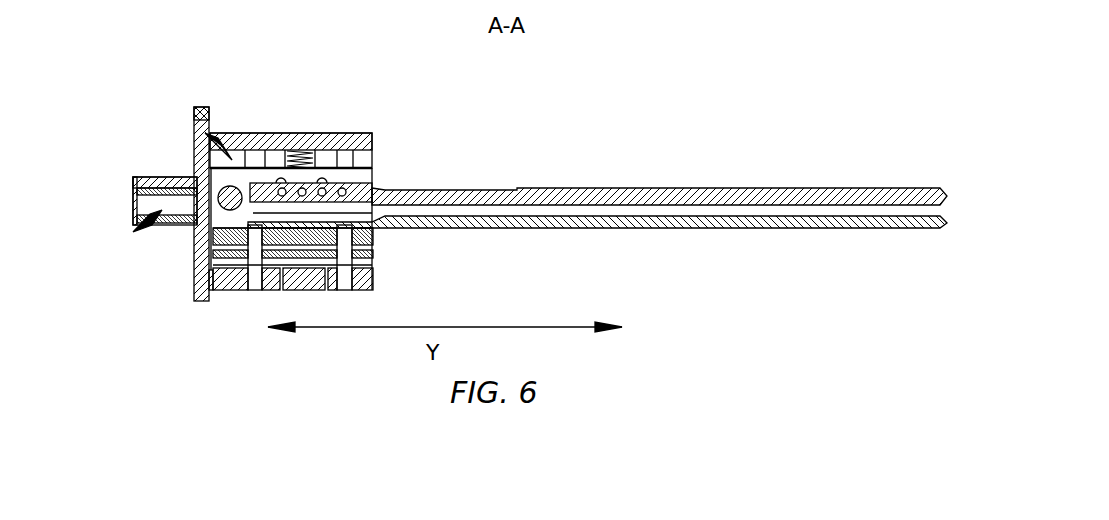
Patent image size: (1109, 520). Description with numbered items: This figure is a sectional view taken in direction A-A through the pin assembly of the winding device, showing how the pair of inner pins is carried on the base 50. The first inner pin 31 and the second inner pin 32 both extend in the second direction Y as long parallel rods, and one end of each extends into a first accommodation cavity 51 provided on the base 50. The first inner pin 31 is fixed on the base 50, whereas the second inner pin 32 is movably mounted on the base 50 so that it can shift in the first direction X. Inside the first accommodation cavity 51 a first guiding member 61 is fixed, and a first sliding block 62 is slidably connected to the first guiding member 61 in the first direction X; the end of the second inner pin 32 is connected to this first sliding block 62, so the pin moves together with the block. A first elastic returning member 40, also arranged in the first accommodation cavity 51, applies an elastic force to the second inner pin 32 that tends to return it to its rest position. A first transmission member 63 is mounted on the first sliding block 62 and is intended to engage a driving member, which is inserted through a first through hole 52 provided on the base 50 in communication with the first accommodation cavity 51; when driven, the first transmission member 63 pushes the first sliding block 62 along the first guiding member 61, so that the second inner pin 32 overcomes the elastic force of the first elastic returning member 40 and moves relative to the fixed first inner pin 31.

The first inner pin 31 is at (465, 228).
The second inner pin 32 is at (440, 185).
The first elastic returning member 40 is at (297, 150).
The base 50 is at (197, 270).
The first accommodation cavity 51 is at (208, 138).
The first through hole 52 is at (140, 228).
The first guiding member 61 is at (252, 162).
The first sliding block 62 is at (350, 178).
The first transmission member 63 is at (230, 198).